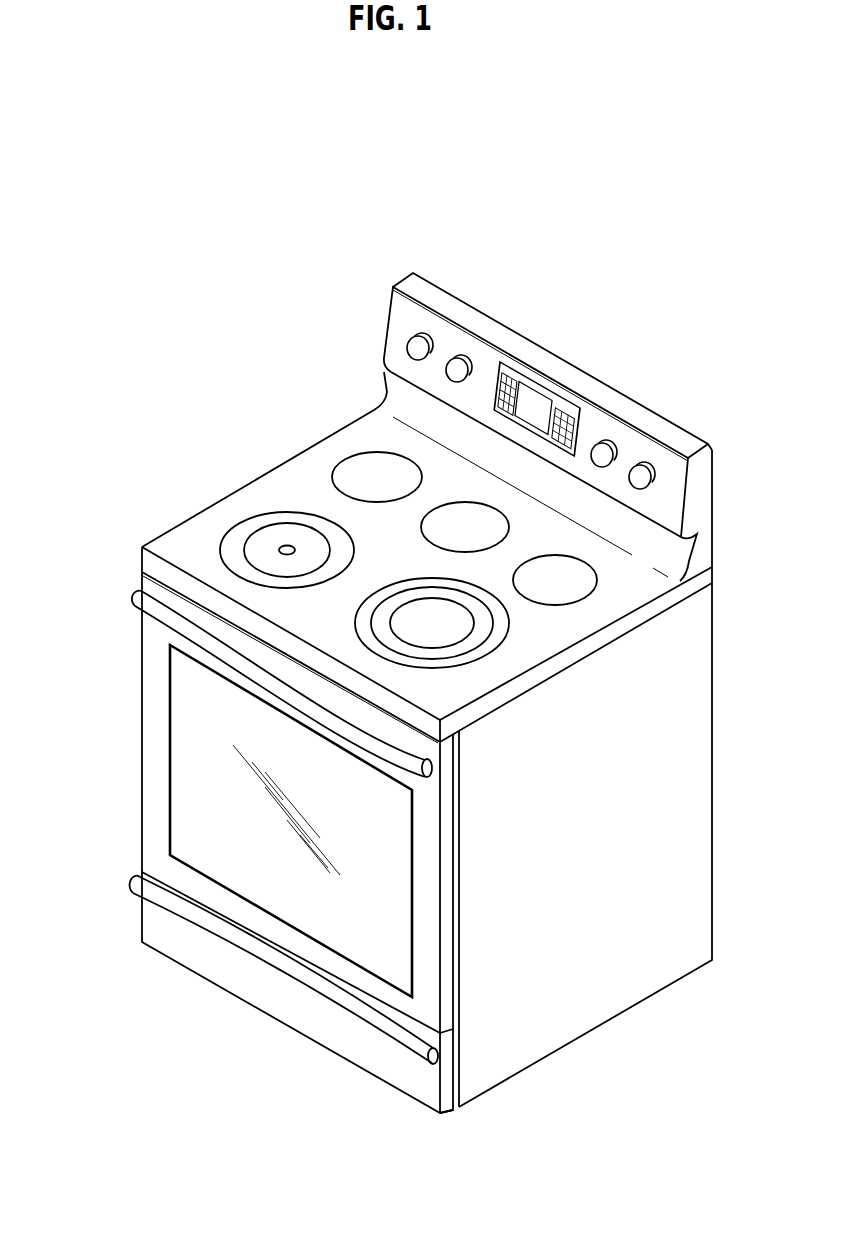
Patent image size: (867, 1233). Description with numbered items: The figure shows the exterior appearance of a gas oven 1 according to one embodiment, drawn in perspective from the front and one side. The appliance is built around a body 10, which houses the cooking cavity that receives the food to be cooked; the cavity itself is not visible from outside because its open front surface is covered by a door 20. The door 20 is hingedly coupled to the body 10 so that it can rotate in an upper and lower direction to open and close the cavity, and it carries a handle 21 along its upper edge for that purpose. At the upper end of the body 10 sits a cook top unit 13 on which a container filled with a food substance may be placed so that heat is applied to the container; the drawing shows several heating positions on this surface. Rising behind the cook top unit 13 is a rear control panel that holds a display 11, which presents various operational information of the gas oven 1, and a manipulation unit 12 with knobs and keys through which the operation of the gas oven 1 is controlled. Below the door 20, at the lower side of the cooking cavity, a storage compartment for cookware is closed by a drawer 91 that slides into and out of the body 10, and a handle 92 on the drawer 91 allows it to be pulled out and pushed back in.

The gas oven 1 is at (465, 170).
The body 10 is at (547, 1018).
The display 11 is at (535, 403).
The manipulation unit 12 is at (570, 413).
The cook top unit 13 is at (287, 537).
The door 20 is at (150, 750).
The handle 21 is at (167, 623).
The drawer 91 is at (190, 957).
The handle 92 is at (167, 912).